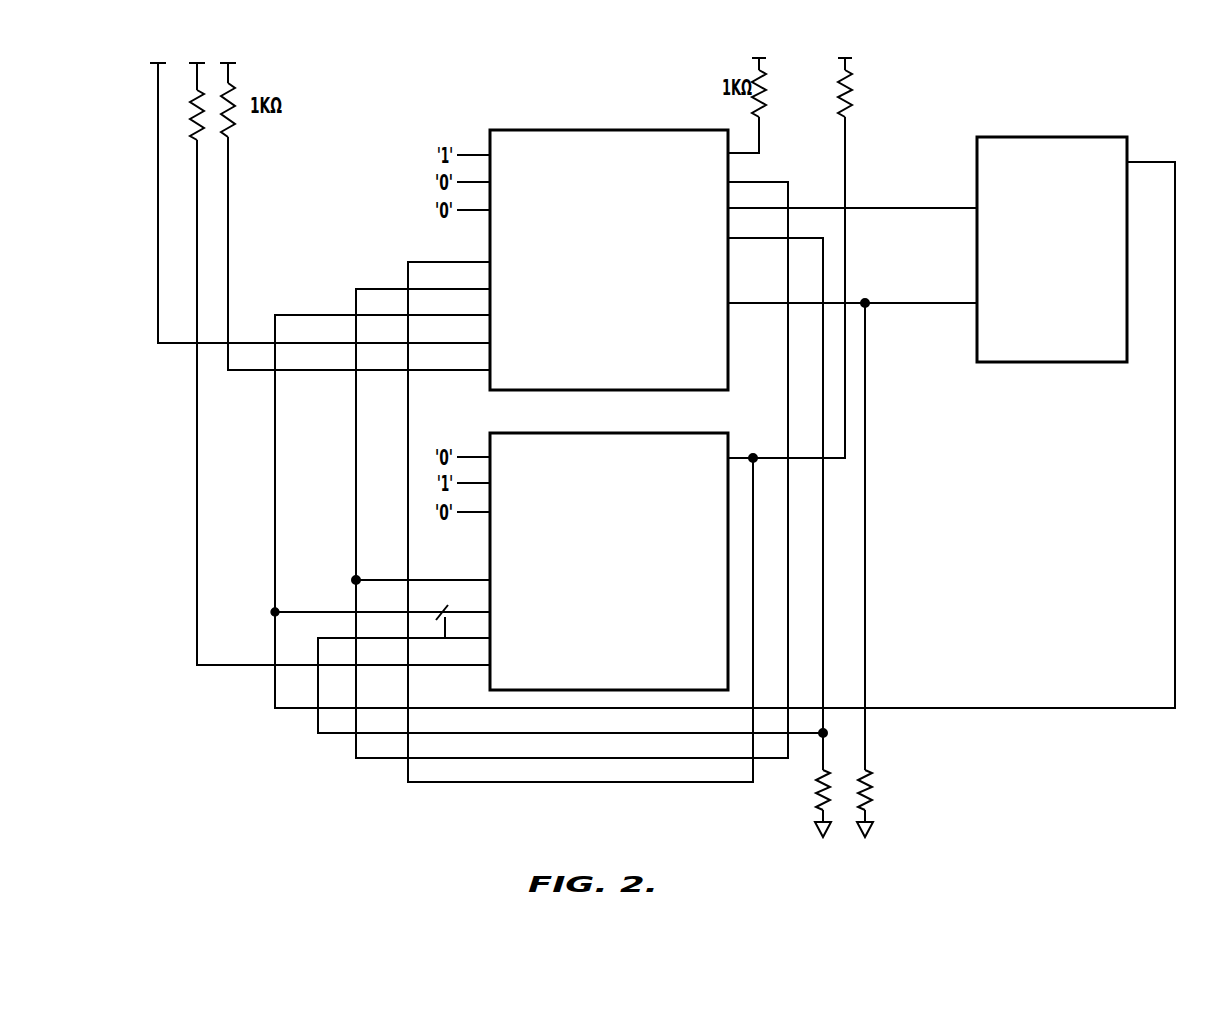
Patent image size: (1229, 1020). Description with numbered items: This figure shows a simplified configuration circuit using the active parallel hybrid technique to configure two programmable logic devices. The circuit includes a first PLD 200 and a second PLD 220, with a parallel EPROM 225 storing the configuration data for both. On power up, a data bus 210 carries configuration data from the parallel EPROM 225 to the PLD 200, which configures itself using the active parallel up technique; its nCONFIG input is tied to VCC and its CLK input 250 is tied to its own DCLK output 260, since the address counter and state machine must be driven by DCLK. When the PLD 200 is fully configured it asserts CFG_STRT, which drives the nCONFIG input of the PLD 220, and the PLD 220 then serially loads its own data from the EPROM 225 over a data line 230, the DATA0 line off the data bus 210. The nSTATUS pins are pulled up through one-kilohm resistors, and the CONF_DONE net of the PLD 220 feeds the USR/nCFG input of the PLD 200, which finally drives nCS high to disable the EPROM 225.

The PLD 200 is at (663, 131).
The PLD 220 is at (680, 434).
The data bus 210 is at (1175, 231).
The parallel EPROM 225 is at (1128, 153).
The CLK input 250 is at (357, 287).
The data line 230 is at (292, 610).
The DCLK output 260 is at (770, 182).